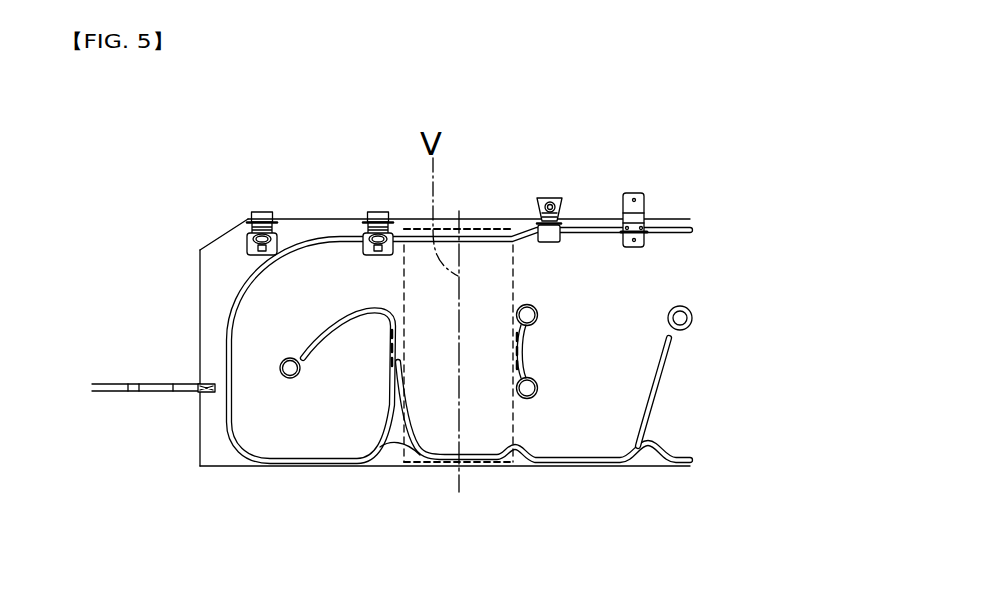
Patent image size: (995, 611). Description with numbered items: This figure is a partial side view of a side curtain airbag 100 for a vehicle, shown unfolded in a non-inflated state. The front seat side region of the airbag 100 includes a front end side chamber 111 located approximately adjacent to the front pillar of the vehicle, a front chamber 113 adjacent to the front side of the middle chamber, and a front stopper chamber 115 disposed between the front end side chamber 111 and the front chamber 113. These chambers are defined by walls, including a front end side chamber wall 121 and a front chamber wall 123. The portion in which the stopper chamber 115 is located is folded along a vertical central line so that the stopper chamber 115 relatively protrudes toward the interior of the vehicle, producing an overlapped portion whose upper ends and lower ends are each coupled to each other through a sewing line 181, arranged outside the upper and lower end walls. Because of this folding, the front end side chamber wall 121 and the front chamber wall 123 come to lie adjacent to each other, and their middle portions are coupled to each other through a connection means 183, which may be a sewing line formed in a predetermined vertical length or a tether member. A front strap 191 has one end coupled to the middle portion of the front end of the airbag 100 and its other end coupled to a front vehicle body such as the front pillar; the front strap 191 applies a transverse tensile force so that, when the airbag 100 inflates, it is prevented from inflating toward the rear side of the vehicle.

The airbag 100 is at (499, 214).
The front end side chamber 111 is at (272, 443).
The front chamber 113 is at (597, 447).
The front stopper chamber 115 is at (485, 433).
The front end side chamber wall 121 is at (397, 440).
The front chamber wall 123 is at (527, 385).
The sewing line 181 is at (420, 226).
The connection means 183 is at (513, 355).
The front strap 191 is at (152, 390).